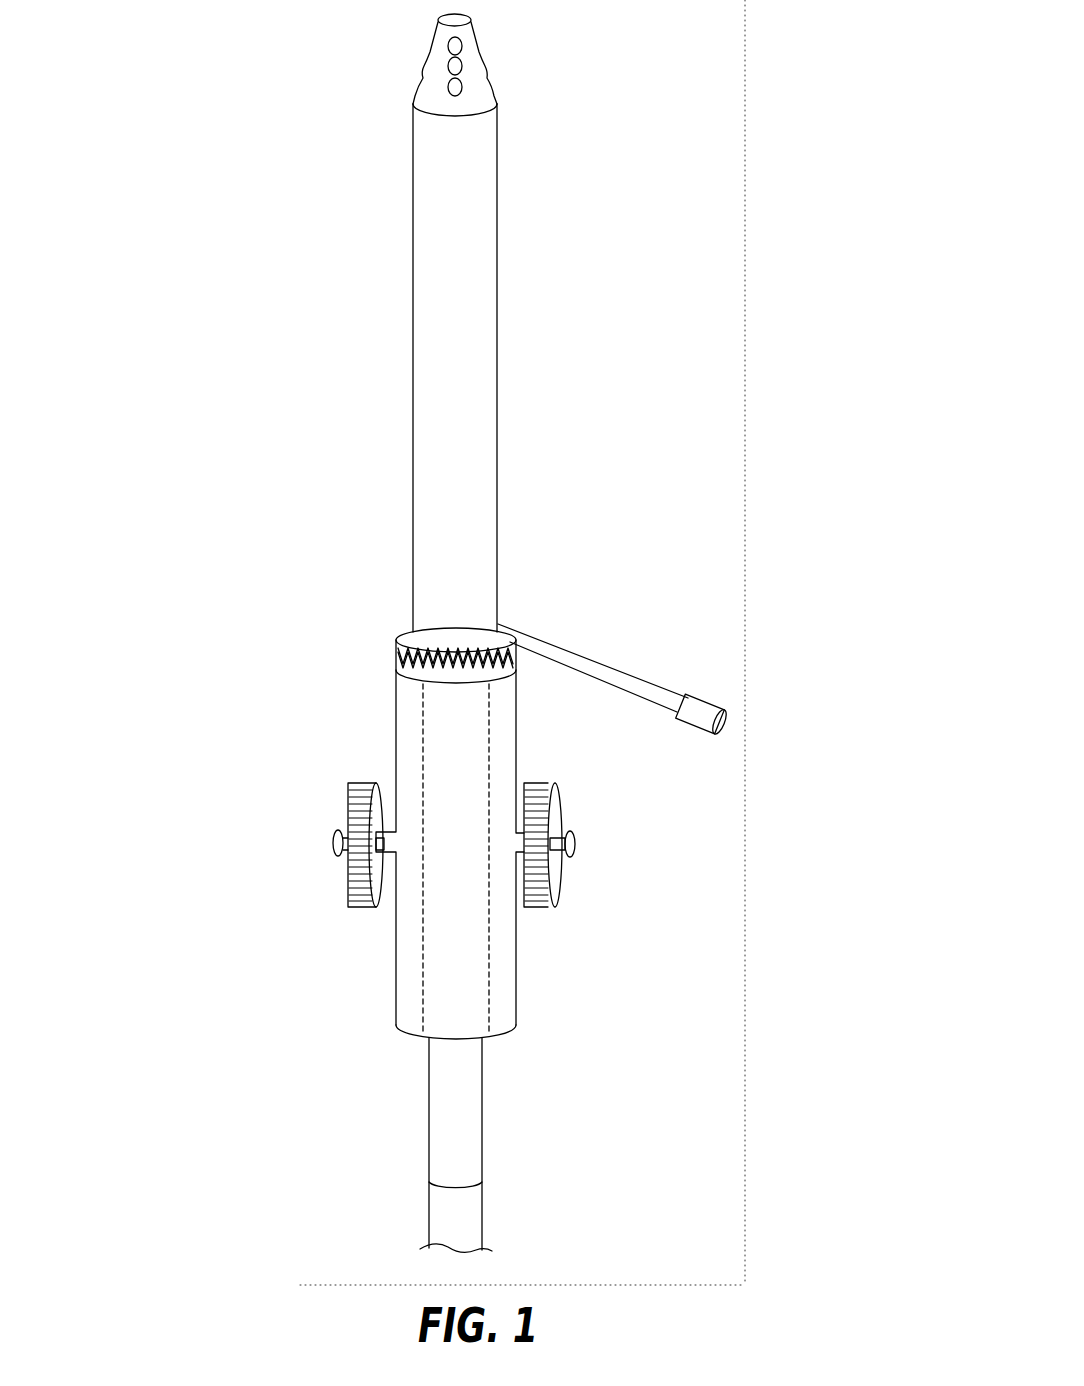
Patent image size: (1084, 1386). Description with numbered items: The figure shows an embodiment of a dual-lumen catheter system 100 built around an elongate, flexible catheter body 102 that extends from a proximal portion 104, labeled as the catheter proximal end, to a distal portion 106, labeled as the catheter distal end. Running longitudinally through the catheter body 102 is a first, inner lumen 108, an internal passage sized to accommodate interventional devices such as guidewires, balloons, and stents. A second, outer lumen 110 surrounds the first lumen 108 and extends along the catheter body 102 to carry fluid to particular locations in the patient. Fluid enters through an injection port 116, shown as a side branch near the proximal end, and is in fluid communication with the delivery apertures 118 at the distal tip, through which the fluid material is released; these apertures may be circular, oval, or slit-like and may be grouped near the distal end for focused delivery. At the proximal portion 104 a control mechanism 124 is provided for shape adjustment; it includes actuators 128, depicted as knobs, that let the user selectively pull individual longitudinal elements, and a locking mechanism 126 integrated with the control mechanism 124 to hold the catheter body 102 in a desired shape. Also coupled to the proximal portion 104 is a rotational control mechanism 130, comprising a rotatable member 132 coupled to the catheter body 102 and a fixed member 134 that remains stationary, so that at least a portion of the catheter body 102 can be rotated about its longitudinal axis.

The catheter system 100 is at (167, 151).
The catheter body 102 is at (335, 402).
The proximal portion 104 is at (608, 1106).
The distal portion 106 is at (569, 116).
The first lumen 108 is at (437, 22).
The second lumen 110 is at (413, 250).
The injection port 116 is at (614, 668).
The delivery apertures 118 is at (462, 92).
The control mechanism 124 is at (298, 881).
The locking mechanism 126 is at (333, 843).
The actuators 128 is at (352, 908).
The rotational control mechanism 130 is at (349, 641).
The rotatable member 132 is at (413, 630).
The fixed member 134 is at (397, 672).